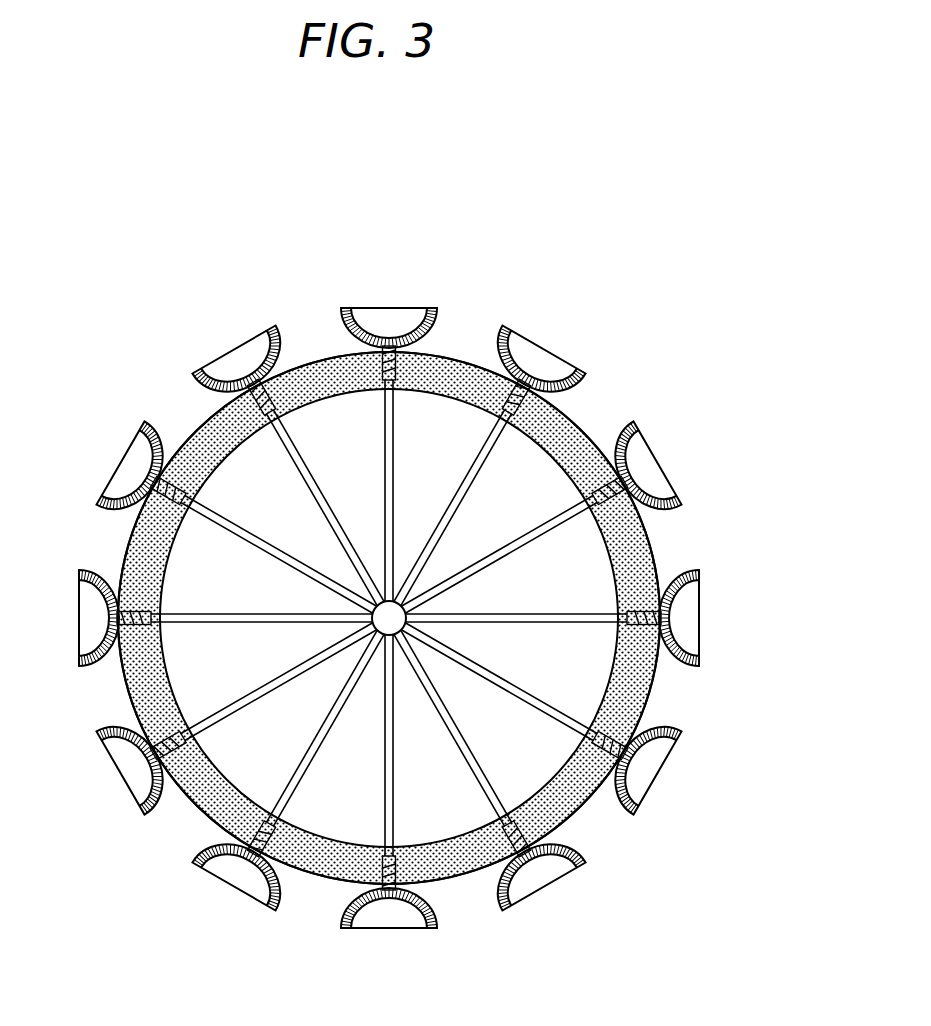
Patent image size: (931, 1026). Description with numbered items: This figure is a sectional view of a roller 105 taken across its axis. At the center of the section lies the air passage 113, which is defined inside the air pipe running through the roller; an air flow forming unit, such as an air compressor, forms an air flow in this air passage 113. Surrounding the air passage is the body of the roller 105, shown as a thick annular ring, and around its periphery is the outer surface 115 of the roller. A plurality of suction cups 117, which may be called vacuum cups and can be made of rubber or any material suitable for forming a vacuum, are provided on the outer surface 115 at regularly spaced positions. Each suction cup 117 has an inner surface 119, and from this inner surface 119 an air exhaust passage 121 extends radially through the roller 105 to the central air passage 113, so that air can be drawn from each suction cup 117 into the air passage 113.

The roller 105 is at (650, 677).
The air passage 113 is at (392, 617).
The outer surface 115 is at (460, 355).
The suction cup 117 is at (578, 372).
The inner surface 119 is at (368, 327).
The air exhaust passage 121 is at (378, 480).